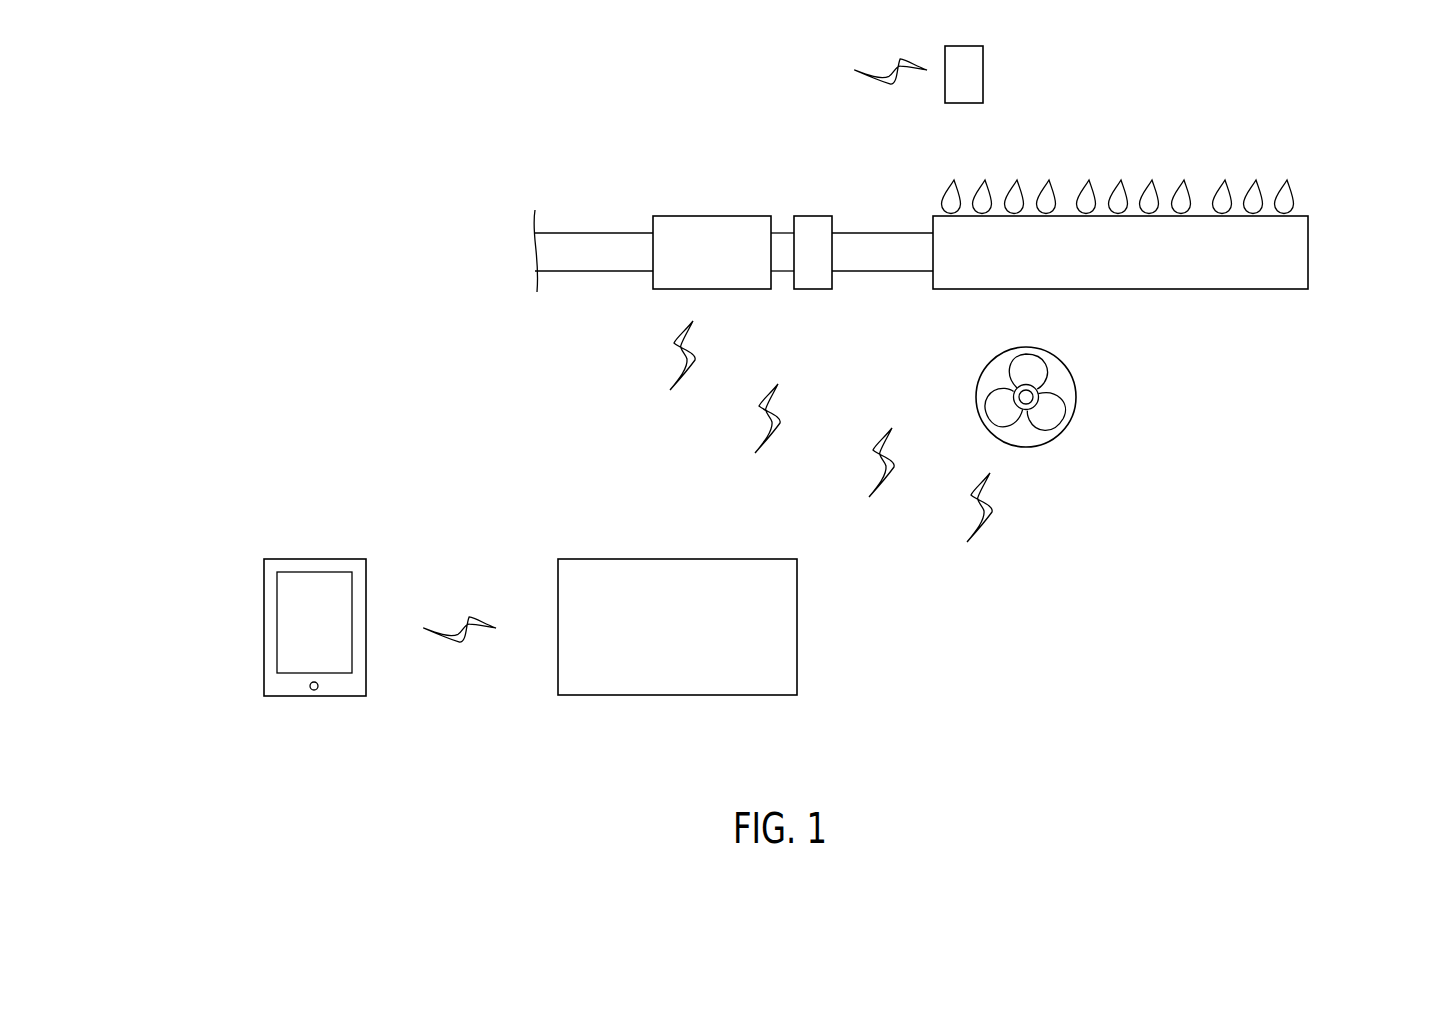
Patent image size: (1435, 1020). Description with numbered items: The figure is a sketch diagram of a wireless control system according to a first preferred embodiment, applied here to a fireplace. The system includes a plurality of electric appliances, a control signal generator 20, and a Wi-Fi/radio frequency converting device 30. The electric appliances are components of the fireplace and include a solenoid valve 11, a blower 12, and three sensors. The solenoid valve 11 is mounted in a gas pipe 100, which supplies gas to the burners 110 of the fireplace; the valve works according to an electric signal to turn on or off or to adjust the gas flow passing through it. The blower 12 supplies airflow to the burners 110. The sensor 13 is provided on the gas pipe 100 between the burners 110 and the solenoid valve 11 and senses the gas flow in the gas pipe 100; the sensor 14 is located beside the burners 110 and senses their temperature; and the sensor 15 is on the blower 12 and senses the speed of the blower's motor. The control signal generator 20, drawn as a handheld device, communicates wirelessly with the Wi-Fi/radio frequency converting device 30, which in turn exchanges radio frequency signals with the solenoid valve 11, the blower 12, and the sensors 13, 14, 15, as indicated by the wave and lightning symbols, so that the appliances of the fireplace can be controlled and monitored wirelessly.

The gas pipe 100 is at (607, 252).
The solenoid valve 11 is at (722, 228).
The sensor 13 is at (815, 228).
The burners 110 is at (1288, 252).
The sensor 14 is at (983, 72).
The blower 12 is at (1080, 440).
The sensor 15 is at (1020, 409).
The control signal generator 20 is at (264, 676).
The Wi-Fi/radio frequency (RF) converting device 30 is at (797, 663).